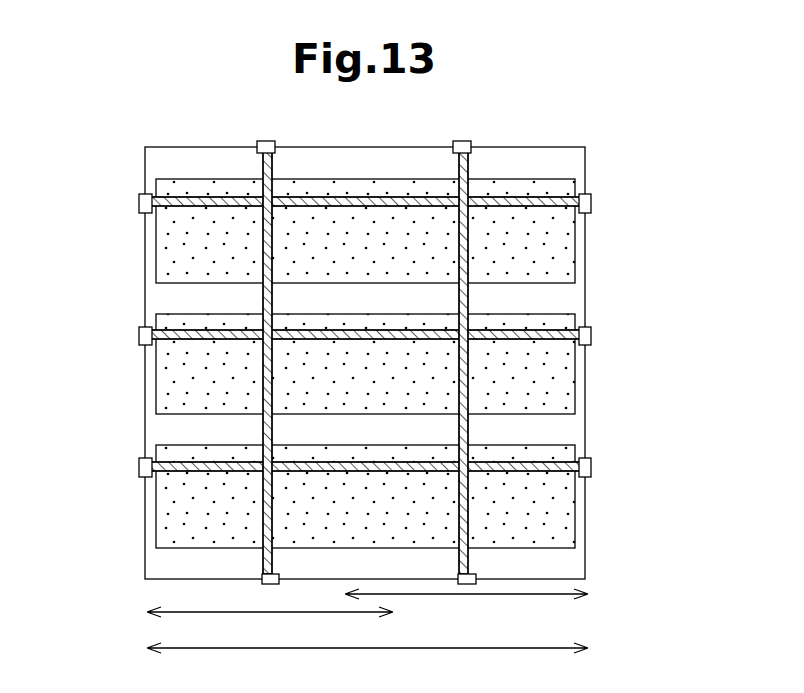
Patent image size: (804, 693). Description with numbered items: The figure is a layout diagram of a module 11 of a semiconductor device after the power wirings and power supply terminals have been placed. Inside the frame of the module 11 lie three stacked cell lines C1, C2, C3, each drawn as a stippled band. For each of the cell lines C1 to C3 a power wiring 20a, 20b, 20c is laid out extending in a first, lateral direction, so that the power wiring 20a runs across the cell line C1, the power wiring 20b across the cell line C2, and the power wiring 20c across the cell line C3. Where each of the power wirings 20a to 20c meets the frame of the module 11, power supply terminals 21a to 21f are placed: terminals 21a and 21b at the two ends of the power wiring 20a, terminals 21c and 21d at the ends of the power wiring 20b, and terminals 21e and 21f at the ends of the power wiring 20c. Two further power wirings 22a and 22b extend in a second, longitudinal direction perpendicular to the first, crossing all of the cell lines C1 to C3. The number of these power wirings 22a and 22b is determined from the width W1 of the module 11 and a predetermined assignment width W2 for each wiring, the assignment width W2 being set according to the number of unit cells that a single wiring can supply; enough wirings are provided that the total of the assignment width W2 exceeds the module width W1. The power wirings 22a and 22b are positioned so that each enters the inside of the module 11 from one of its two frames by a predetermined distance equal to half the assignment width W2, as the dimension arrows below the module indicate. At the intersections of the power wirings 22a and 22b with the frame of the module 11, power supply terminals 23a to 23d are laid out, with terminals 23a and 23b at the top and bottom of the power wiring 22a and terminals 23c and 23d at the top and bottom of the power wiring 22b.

The module 11 is at (585, 147).
The power wiring 20a is at (356, 197).
The power wiring 20b is at (356, 330).
The power wiring 20c is at (356, 462).
The power supply terminal 21a is at (138, 203).
The power supply terminal 21b is at (592, 202).
The power supply terminal 21c is at (138, 336).
The power supply terminal 21d is at (592, 336).
The power supply terminal 21e is at (138, 467).
The power supply terminal 21f is at (592, 467).
The power wiring 22a is at (272, 168).
The power wiring 22b is at (468, 168).
The power supply terminal 23a is at (267, 141).
The power supply terminal 23b is at (279, 579).
The power supply terminal 23c is at (463, 141).
The power supply terminal 23d is at (476, 579).
The cell line C1 is at (570, 253).
The cell line C2 is at (570, 384).
The cell line C3 is at (570, 516).
The width of the module W1 is at (374, 648).
The assignment width W2 is at (465, 594).